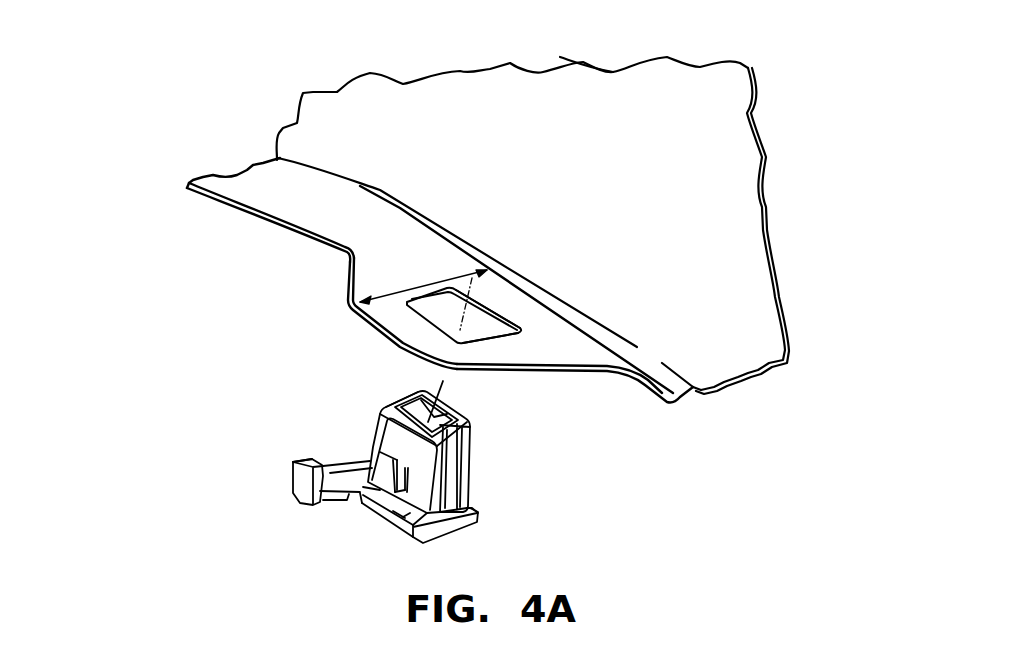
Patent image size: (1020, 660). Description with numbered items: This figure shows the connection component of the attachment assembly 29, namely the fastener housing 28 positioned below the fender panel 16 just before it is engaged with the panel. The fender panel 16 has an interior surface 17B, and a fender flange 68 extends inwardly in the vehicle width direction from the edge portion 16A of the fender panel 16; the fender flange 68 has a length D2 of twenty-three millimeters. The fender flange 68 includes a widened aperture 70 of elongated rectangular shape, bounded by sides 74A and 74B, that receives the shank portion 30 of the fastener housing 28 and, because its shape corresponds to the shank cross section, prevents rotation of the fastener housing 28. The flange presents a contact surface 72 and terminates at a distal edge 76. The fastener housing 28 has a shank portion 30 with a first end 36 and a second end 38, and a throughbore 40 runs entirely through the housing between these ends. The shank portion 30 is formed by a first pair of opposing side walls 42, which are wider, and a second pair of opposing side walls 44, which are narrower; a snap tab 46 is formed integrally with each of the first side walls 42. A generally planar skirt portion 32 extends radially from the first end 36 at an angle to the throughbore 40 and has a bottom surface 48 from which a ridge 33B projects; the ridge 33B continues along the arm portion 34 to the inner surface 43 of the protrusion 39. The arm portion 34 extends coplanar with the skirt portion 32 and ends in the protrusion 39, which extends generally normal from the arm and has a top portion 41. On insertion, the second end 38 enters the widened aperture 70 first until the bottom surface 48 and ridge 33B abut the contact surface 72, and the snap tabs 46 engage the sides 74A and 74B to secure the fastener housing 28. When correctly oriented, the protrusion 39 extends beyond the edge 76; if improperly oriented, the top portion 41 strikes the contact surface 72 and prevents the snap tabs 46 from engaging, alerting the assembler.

The fender panel 16 is at (667, 73).
The interior surface 17B is at (529, 137).
The attachment assembly 29 is at (131, 163).
The fender flange 68 is at (258, 182).
The distal edge of the fender flange 76 is at (360, 318).
The contact surface 72 is at (560, 372).
The widened aperture 70 is at (492, 298).
The side of the widened aperture 74A is at (493, 310).
The side of the widened aperture 74B is at (500, 333).
The edge portion 16A is at (637, 349).
The length of the fender flange D2 is at (420, 287).
The fastener housing 28 is at (395, 476).
The shank portion 30 is at (475, 460).
The skirt portion 32 is at (458, 535).
The arm portion 34 is at (323, 470).
The first end 36 is at (407, 520).
The second end 38 is at (470, 412).
The protrusion 39 is at (297, 480).
The throughbore 40 is at (445, 403).
The top portion of the protrusion 41 is at (300, 463).
The first pair of opposing side walls 42 is at (364, 422).
The inner surface of the protrusion 43 is at (330, 503).
The second pair of opposing side walls 44 is at (471, 486).
The snap tab 46 is at (388, 458).
The bottom surface 48 is at (388, 518).
The ridge 33B is at (343, 470).